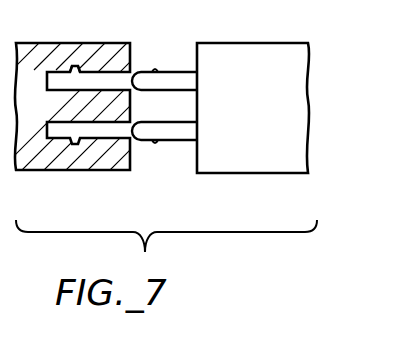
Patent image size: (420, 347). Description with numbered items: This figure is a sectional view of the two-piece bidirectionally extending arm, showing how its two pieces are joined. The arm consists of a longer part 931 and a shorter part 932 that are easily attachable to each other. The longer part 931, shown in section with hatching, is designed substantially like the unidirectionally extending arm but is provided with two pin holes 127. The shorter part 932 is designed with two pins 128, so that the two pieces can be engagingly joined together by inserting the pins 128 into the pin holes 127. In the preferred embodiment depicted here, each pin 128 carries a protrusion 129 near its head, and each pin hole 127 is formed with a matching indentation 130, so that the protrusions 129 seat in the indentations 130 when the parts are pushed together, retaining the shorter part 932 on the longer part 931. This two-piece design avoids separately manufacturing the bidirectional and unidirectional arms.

The pin hole 127 is at (93, 71).
The pin 128 is at (183, 141).
The protrusion 129 is at (155, 68).
The indentation 130 is at (76, 65).
The longer part 931 is at (83, 171).
The shorter part 932 is at (235, 160).